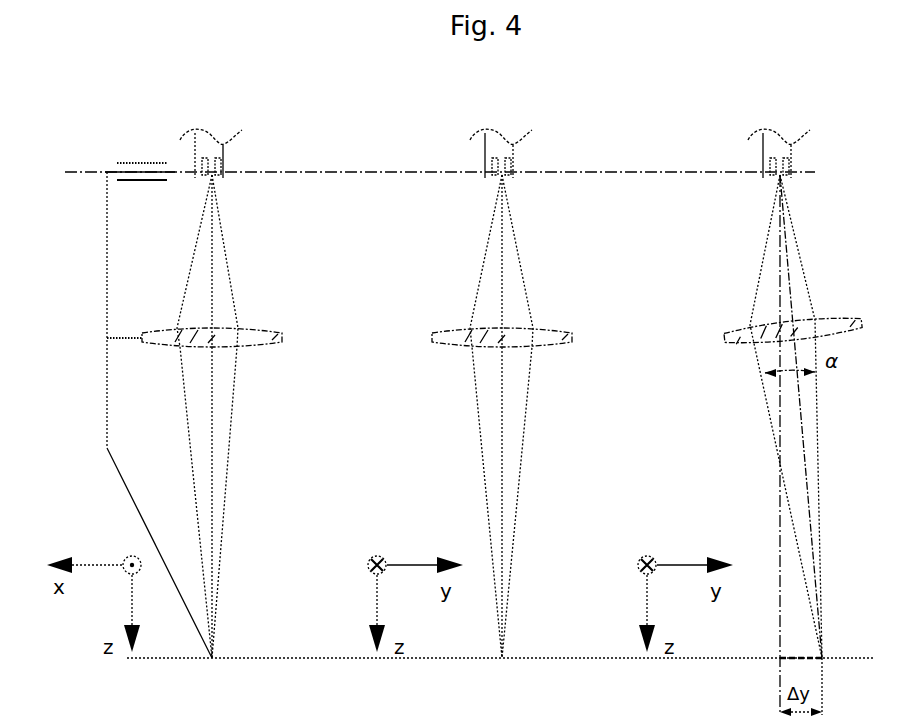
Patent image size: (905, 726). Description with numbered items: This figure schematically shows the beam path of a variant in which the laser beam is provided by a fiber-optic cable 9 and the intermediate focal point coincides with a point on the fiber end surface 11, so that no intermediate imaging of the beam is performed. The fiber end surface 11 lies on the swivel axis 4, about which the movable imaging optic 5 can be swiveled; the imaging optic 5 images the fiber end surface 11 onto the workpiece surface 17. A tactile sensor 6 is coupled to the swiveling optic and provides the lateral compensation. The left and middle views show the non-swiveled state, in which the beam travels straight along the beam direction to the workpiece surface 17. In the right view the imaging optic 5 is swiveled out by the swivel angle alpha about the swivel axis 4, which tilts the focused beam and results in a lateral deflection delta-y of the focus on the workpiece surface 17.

The swivel axis 4 is at (152, 172).
The movable imaging optic 5 is at (163, 340).
The tactile sensor 6 is at (163, 567).
The fiber-optic cable 9 is at (207, 147).
The fiber end surface 11 is at (213, 172).
The workpiece surface 17 is at (552, 658).